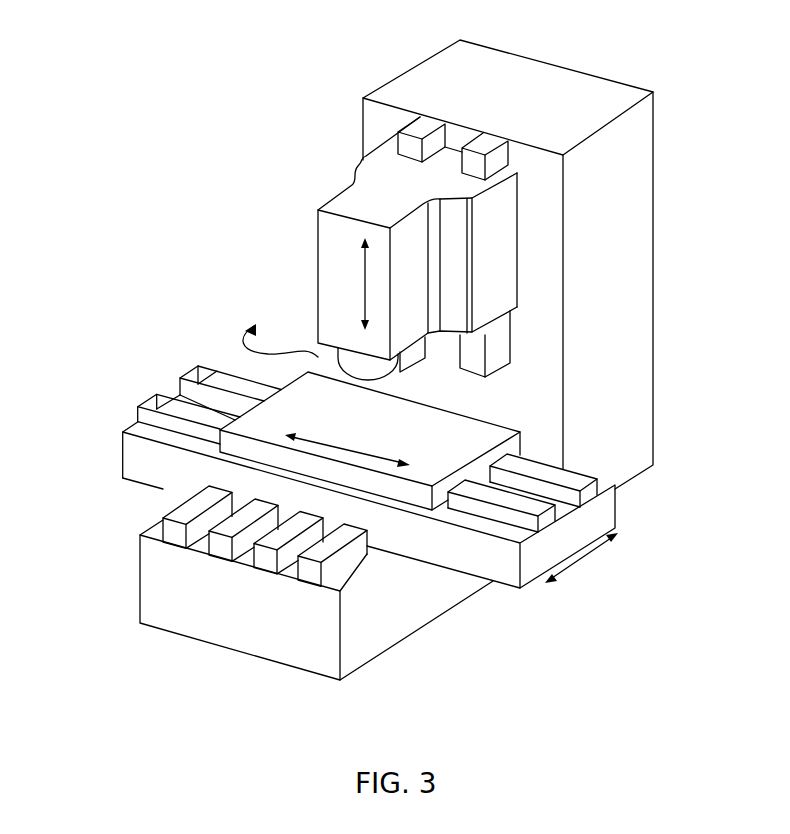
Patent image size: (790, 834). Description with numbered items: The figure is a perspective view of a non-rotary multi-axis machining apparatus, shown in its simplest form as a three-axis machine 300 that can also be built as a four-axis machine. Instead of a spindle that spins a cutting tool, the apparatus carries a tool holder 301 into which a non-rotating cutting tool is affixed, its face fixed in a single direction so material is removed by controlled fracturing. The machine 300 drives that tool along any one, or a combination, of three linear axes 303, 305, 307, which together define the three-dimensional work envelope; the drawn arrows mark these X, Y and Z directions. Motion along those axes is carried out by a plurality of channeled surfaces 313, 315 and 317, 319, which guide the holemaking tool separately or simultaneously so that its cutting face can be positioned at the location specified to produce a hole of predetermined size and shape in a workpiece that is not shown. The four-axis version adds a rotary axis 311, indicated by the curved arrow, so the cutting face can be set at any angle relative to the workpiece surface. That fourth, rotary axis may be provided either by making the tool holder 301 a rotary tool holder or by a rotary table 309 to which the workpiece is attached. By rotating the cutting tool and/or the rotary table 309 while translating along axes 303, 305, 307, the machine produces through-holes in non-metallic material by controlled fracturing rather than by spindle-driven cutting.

The 3-axis machine 300 is at (159, 187).
The tool holder 301 is at (472, 436).
The linear axis 303 is at (364, 430).
The linear axis 305 is at (624, 600).
The linear axis 307 is at (274, 283).
The rotary table 309 is at (373, 370).
The rotary axis 311 is at (202, 348).
The channeled surface 313 is at (138, 457).
The channeled surface 315 is at (402, 612).
The channeled surface 317 is at (350, 207).
The channeled surface 319 is at (433, 76).